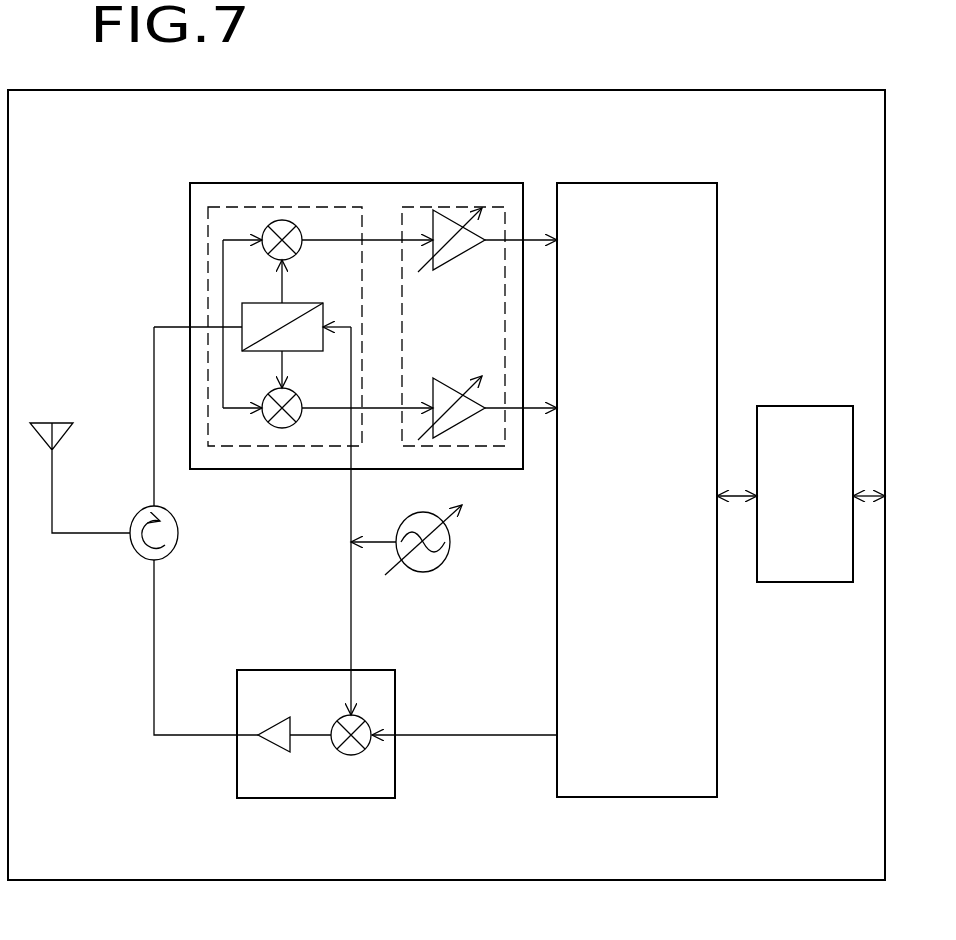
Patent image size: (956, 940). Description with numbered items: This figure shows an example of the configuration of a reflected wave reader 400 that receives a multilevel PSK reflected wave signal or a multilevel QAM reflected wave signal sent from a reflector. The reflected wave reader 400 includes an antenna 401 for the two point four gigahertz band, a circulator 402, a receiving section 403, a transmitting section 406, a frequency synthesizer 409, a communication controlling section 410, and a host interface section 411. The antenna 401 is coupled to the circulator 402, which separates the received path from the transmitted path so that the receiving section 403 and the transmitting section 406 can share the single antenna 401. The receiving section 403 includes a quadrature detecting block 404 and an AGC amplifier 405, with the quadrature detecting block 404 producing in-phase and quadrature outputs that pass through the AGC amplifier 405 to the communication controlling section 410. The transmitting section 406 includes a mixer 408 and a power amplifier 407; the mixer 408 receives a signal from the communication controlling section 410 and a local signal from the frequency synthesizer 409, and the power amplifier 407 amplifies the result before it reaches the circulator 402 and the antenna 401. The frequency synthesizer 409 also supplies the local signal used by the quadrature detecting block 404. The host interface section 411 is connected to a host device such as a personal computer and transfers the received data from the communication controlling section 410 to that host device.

The reflected wave reader 400 is at (694, 89).
The antenna 401 is at (73, 428).
The circulator 402 is at (178, 533).
The receiving section 403 is at (358, 183).
The quadrature detecting block 404 is at (293, 207).
The AGC amplifier 405 is at (455, 207).
The transmitting section 406 is at (315, 800).
The power amplifier 407 is at (273, 755).
The mixer 408 is at (351, 756).
The frequency synthesizer 409 is at (450, 540).
The communication controlling section 410 is at (717, 200).
The host interface section 411 is at (806, 406).